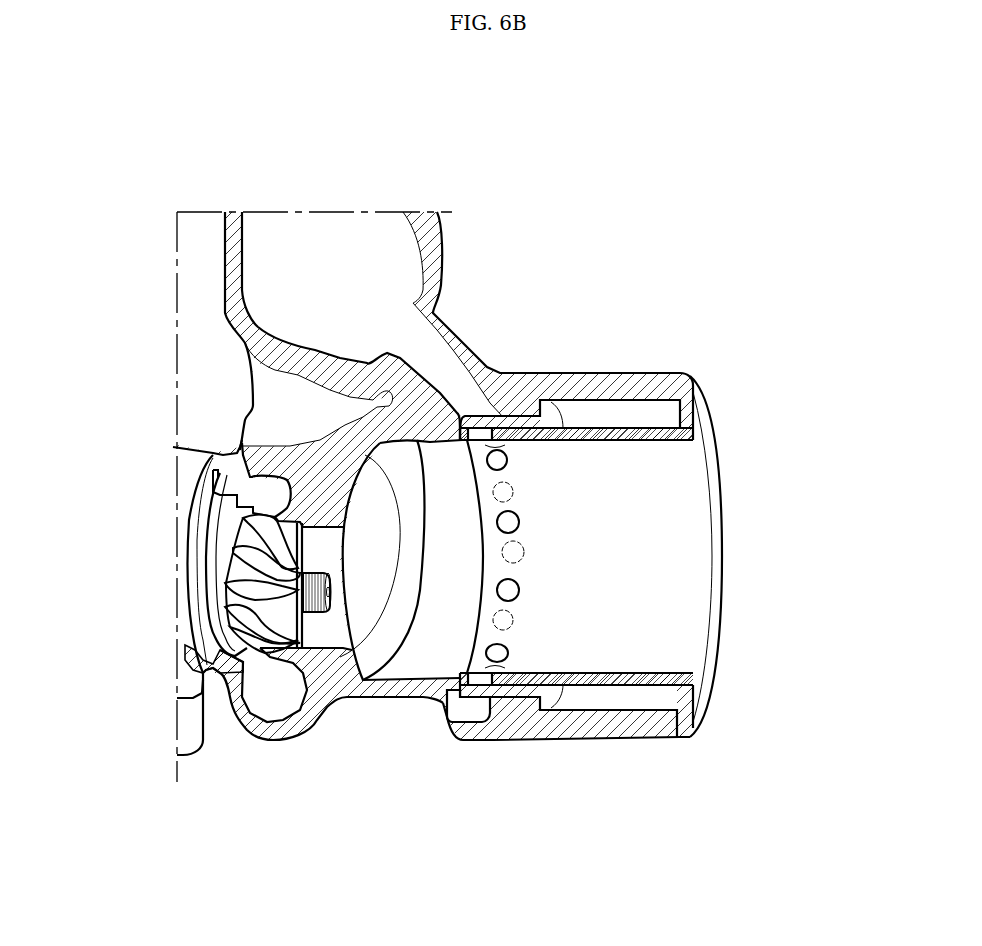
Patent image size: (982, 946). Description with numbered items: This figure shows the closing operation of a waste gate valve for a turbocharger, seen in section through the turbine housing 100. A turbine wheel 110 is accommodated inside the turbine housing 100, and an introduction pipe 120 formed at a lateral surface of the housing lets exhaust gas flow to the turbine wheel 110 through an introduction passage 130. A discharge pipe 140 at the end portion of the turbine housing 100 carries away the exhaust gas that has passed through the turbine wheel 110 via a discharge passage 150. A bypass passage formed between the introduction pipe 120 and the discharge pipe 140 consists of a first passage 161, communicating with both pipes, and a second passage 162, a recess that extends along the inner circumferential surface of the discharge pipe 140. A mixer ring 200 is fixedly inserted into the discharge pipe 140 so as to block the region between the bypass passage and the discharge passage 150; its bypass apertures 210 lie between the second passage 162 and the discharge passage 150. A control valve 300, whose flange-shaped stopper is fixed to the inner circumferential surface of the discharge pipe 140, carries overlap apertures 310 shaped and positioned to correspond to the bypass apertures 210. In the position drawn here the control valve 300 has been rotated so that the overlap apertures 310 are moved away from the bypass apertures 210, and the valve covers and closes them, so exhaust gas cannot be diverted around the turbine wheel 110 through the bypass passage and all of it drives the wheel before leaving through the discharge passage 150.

The turbine housing 100 is at (433, 497).
The turbine wheel 110 is at (243, 612).
The introduction pipe 120 is at (227, 260).
The introduction passage 130 is at (336, 256).
The discharge pipe 140 is at (627, 727).
The discharge passage 150 is at (688, 583).
The first passage 161 is at (427, 363).
The second passage 162 is at (467, 712).
The mixer ring 200 is at (683, 468).
The bypass apertures 210 is at (507, 653).
The control valve 300 is at (519, 423).
The overlap apertures 310 is at (503, 493).